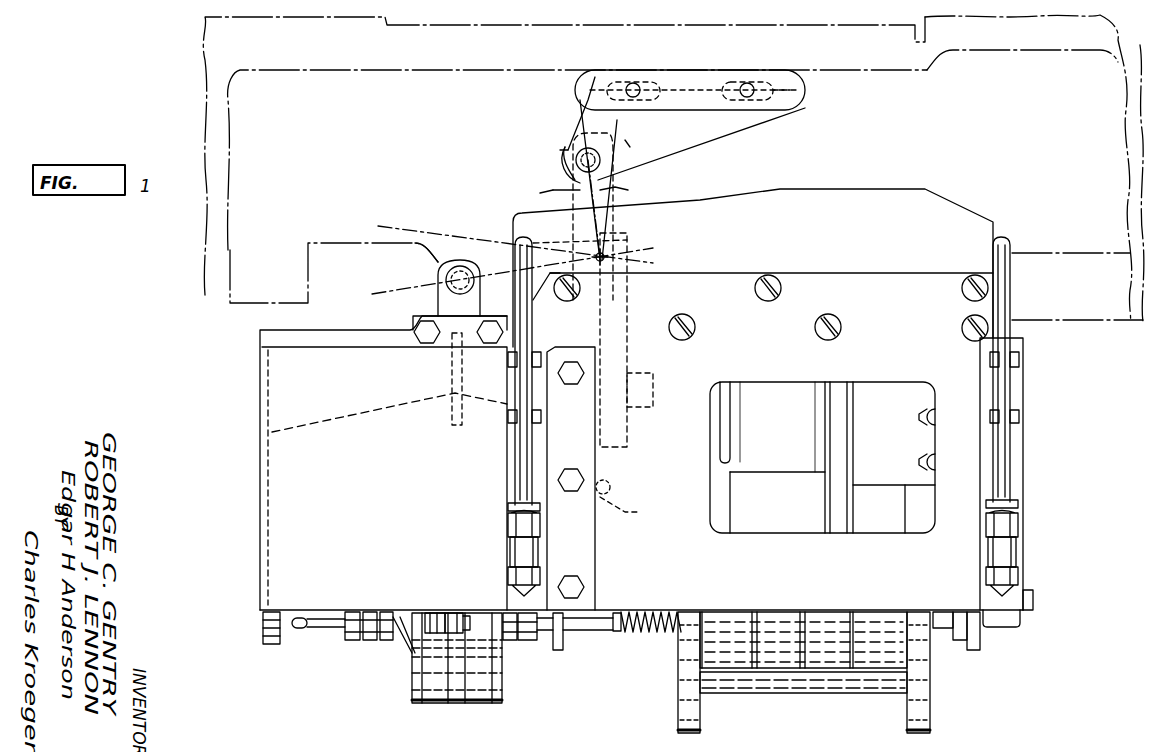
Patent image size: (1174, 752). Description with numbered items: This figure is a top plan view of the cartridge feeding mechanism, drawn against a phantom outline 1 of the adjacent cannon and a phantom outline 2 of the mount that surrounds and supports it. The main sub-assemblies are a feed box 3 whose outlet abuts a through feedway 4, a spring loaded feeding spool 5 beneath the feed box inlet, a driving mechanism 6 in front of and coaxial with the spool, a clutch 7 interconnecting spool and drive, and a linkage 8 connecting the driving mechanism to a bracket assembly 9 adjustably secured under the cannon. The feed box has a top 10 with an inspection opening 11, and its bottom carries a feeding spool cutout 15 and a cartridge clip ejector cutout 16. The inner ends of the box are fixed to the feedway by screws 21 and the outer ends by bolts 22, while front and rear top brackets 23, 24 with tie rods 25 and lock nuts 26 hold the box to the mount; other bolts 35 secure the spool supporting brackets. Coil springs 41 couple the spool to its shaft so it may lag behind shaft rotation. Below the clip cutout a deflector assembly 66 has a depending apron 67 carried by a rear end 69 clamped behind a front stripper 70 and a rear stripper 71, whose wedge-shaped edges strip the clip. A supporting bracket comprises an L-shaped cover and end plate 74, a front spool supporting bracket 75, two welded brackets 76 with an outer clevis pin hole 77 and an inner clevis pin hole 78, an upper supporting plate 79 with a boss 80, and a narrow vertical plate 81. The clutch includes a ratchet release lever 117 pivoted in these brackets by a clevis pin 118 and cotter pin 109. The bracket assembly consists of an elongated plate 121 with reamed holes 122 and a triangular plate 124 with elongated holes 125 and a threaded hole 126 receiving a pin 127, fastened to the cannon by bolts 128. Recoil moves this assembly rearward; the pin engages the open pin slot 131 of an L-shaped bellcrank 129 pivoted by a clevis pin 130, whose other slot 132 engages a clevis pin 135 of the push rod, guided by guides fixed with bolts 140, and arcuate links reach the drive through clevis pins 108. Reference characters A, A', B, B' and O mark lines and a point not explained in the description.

The phantom outline of cannon structure 1 is at (205, 60).
The phantom outline of mount 2 is at (1128, 38).
The feed box 3 is at (733, 343).
The through feedway 4 is at (932, 190).
The feeding spool 5 is at (776, 702).
The driving mechanism 6 is at (378, 662).
The clutch 7 is at (542, 668).
The linkage 8 is at (508, 203).
The bracket assembly 9 is at (548, 112).
The top 10 is at (903, 274).
The inspection opening 11 is at (768, 384).
The feeding spool cutout 15 is at (922, 505).
The cartridge clip ejector cutout 16 is at (850, 445).
The screws 21 is at (966, 330).
The bolts 22 is at (1022, 360).
The front top bracket 23 is at (509, 552).
The rear top bracket 24 is at (1019, 546).
The tie rods 25 is at (513, 464).
The lock nuts 26 is at (510, 530).
The bolts 35 is at (582, 472).
The coil springs 41 is at (748, 670).
The cartridge clip deflector assembly 66 is at (765, 452).
The deflector apron 67 is at (812, 472).
The rear end 69 is at (842, 503).
The front stripper 70 is at (734, 515).
The rear stripper 71 is at (824, 491).
The L-shaped cover and end plate 74 is at (259, 514).
The front spool supporting bracket 75 is at (565, 640).
The brackets 76 is at (655, 392).
The outer clevis pin hole 77 is at (628, 476).
The inner clevis pin hole 78 is at (579, 297).
The upper supporting plate 79 is at (340, 427).
The boss 80 is at (420, 318).
The vertical plate 81 is at (453, 415).
The clevis pin 108 is at (438, 598).
The cotter pin 109 is at (462, 615).
The ratchet release lever 117 is at (637, 510).
The clevis pin 118 is at (612, 490).
The elongated plate 121 is at (793, 68).
The reamed holes 122 is at (641, 88).
The triangular shaped plate 124 is at (712, 142).
The elongated holes 125 is at (805, 90).
The threaded hole 126 is at (565, 135).
The pin 127 is at (577, 167).
The bolts 128 is at (740, 95).
The L-shaped bellcrank 129 is at (628, 190).
The clevis pin 130 is at (630, 242).
The open pin slot 131 is at (600, 133).
The open pin slot 132 is at (446, 276).
The clevis pin 135 is at (477, 250).
The bolts 140 is at (477, 334).
The axis A is at (541, 191).
The axis A' is at (638, 146).
The axis B is at (500, 278).
The axis B' is at (500, 232).
The pivot point O is at (604, 262).